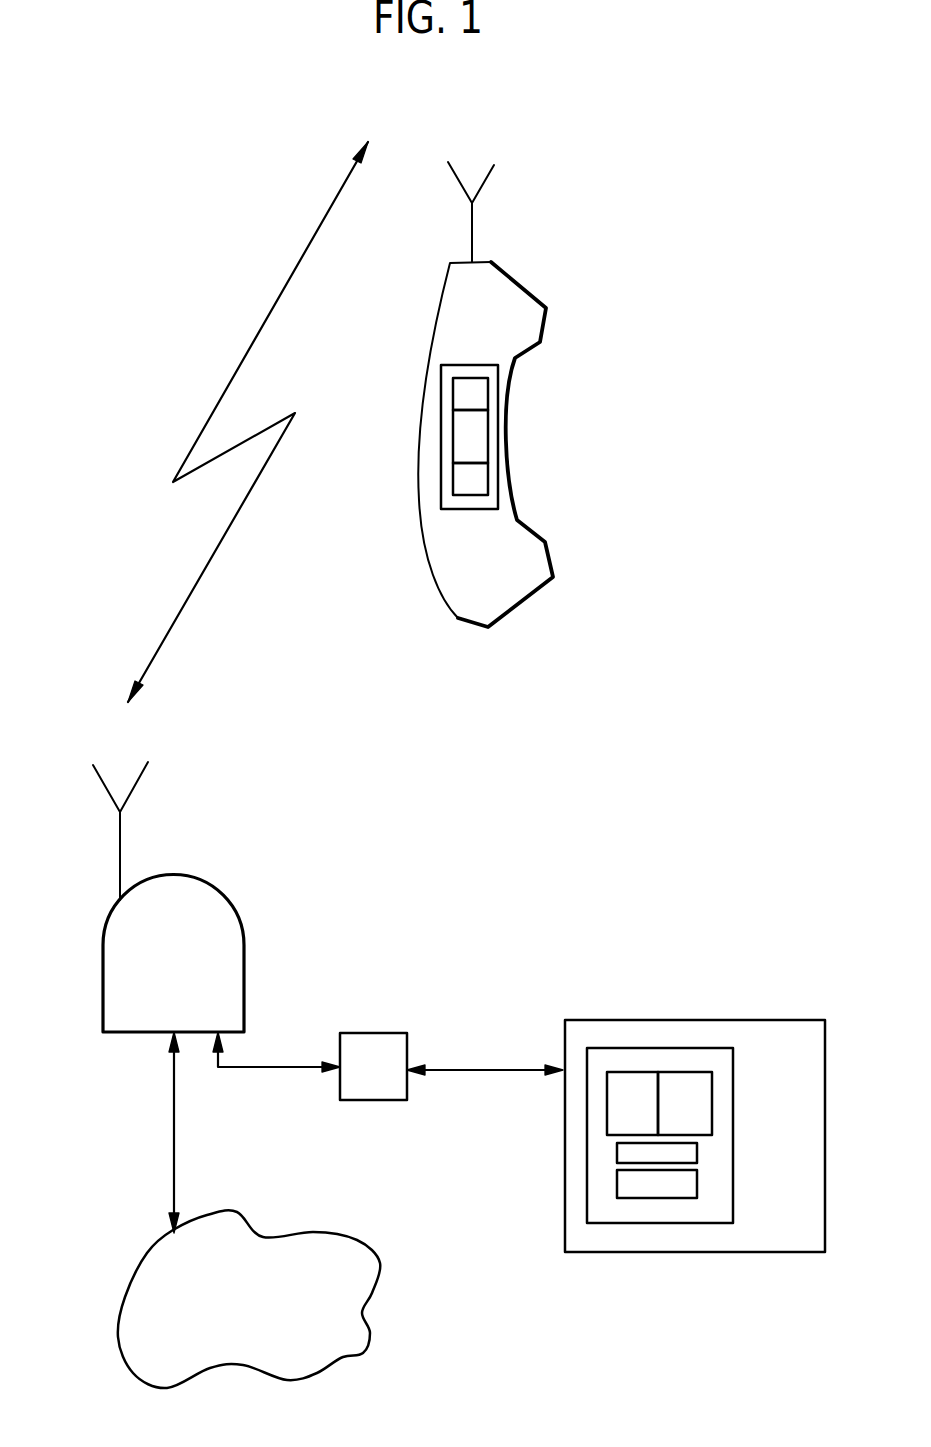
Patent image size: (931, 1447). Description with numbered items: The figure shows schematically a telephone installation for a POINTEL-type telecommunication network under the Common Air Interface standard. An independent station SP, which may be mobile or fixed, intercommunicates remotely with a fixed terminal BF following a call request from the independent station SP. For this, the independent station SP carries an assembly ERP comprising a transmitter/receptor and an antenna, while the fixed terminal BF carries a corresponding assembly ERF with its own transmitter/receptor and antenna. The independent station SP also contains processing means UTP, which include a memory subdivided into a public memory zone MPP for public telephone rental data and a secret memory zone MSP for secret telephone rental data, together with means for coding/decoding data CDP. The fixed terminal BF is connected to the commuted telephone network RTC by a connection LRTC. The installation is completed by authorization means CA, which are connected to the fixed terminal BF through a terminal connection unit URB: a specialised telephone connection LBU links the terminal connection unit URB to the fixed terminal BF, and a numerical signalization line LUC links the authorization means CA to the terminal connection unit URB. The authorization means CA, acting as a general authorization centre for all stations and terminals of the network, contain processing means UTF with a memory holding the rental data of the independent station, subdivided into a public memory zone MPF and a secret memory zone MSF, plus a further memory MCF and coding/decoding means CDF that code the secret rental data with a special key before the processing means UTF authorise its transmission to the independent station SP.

The transmitter/receptor and antenna assembly ERP is at (482, 193).
The independent station SP is at (510, 588).
The processing means UTP is at (498, 394).
The public memory zone MPP is at (465, 393).
The secret memory zone MSP is at (463, 442).
The coding/decoding means CDP is at (463, 480).
The transmitter/receptor and antenna assembly ERF is at (137, 785).
The fixed terminal BF is at (220, 958).
The commuted telephone network connection LRTC is at (174, 1143).
The specialised telephone connection LBU is at (278, 1065).
The terminal connection unit URB is at (372, 1047).
The numerical signalization line LUC is at (480, 1068).
The authorization means CA is at (797, 1020).
The processing means UTF is at (667, 1223).
The secret memory zone MSF is at (628, 1090).
The public memory zone MPF is at (690, 1088).
The card control memory MCF is at (680, 1155).
The coding/decoding means CDF is at (628, 1182).
The commuted network RTC is at (328, 1255).